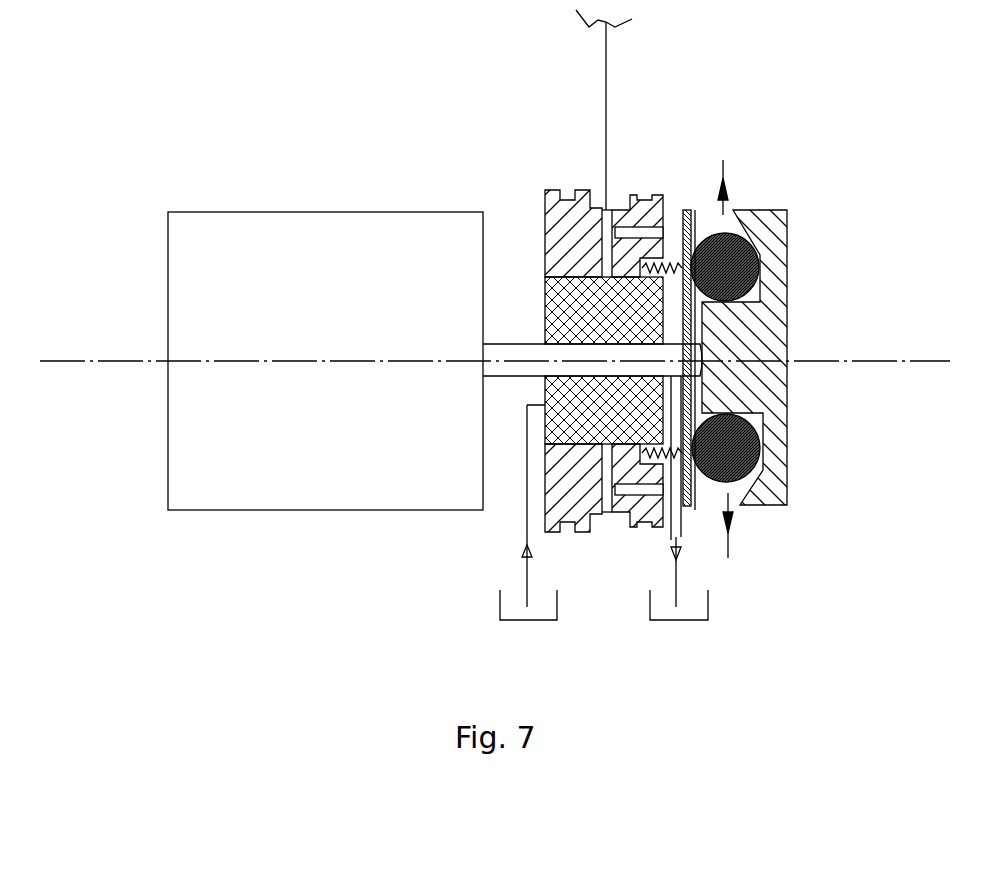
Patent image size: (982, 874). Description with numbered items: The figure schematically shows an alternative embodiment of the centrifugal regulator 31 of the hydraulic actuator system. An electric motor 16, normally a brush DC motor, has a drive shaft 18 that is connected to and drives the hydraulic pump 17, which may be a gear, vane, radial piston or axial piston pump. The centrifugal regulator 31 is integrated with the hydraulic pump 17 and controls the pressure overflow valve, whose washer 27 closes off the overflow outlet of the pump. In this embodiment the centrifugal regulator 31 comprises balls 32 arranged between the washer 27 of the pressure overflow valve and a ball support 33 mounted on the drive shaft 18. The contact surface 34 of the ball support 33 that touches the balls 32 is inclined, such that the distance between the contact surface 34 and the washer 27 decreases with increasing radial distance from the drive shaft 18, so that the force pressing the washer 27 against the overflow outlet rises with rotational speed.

The electric motor 16 is at (238, 230).
The hydraulic pump 17 is at (545, 283).
The drive shaft 18 is at (508, 363).
The washer 27 is at (684, 213).
The centrifugal regulator 31 is at (762, 574).
The balls 32 is at (736, 252).
The ball support 33 is at (773, 341).
The contact surface 34 is at (760, 505).